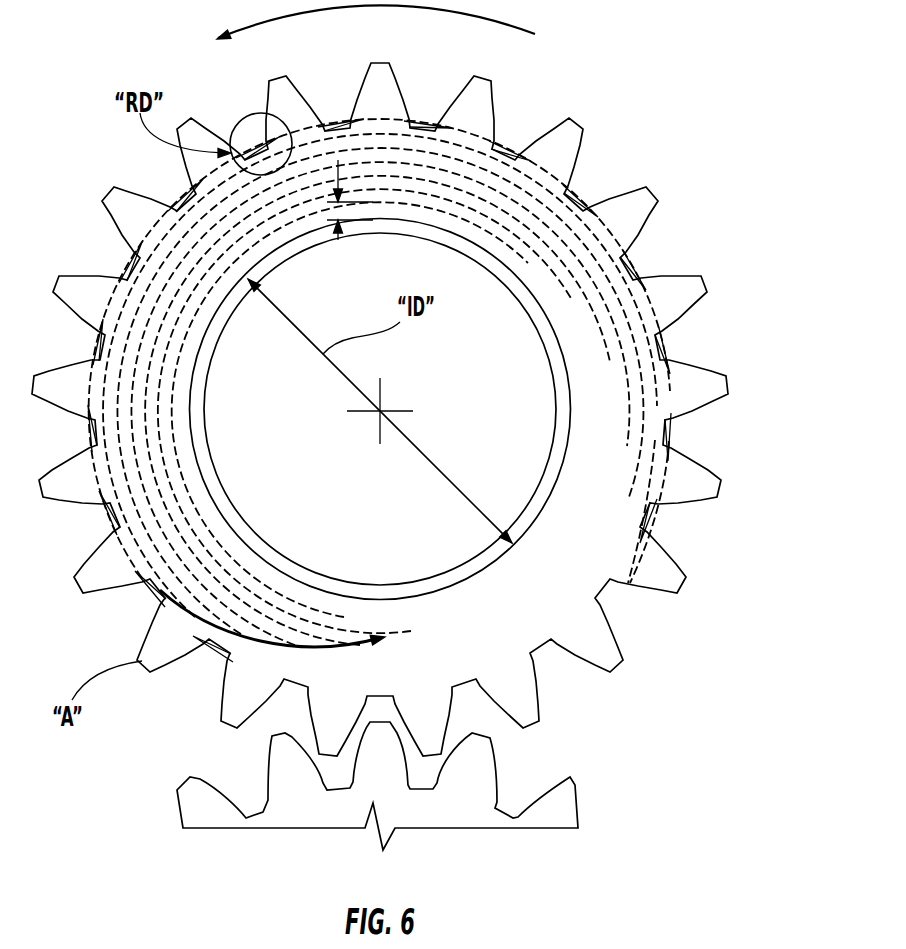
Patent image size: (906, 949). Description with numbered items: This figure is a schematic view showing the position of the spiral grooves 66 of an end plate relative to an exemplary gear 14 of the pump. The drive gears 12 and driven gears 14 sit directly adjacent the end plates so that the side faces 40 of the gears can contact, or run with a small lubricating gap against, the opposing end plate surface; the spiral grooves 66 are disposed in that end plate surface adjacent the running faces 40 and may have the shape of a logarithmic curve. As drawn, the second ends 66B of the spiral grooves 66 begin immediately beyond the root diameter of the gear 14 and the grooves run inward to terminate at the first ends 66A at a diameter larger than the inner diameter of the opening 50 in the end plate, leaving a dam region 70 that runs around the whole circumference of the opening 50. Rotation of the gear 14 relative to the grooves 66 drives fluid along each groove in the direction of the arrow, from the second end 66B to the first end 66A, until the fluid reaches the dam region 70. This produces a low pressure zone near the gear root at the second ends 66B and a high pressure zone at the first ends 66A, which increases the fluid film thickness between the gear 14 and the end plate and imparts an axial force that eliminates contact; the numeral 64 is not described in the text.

The drive gear 12 is at (468, 788).
The driven gear 14 is at (660, 194).
The side face 40 is at (555, 615).
The opening 50 is at (549, 474).
The gear body core 64 is at (618, 303).
The spiral grooves 66 is at (575, 200).
The first ends 66A is at (655, 189).
The second ends 66B is at (643, 560).
The dam region 70 is at (393, 209).